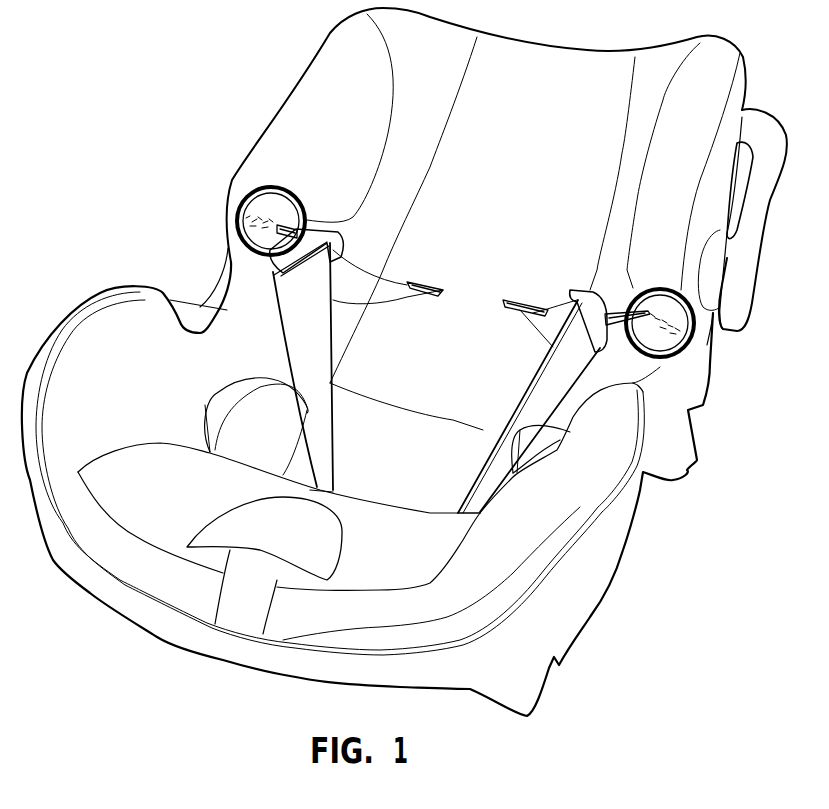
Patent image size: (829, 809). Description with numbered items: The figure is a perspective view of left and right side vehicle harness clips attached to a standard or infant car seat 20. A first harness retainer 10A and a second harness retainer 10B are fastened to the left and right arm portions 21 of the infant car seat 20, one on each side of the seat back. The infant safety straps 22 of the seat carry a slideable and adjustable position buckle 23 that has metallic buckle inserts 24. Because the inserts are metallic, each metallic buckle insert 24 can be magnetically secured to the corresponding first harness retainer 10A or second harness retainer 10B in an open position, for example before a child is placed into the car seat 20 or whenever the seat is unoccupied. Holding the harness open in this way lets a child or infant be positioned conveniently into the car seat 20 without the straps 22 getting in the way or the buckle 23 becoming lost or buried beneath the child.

The first harness retainer 10A is at (240, 243).
The second harness retainer 10B is at (681, 350).
The infant car seat 20 is at (321, 56).
The arm portion 21 is at (233, 202).
The infant safety strap 22 is at (377, 303).
The buckle 23 is at (337, 233).
The metallic buckle insert 24 is at (278, 221).